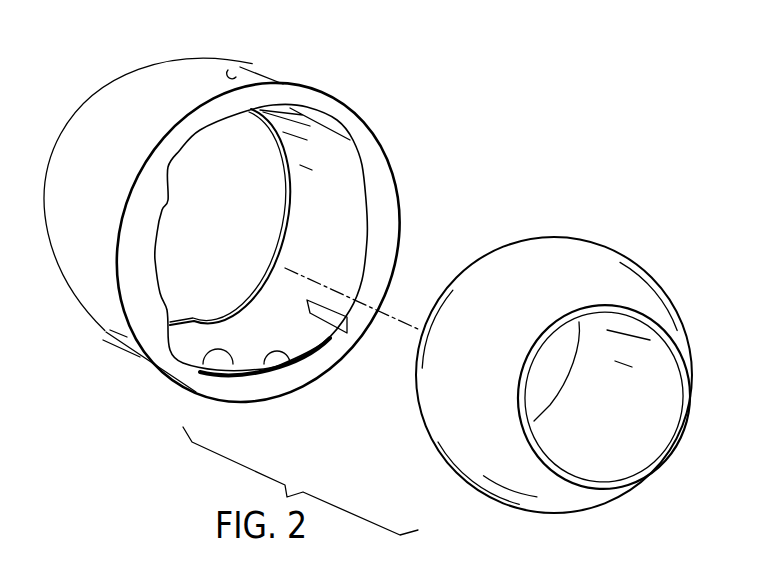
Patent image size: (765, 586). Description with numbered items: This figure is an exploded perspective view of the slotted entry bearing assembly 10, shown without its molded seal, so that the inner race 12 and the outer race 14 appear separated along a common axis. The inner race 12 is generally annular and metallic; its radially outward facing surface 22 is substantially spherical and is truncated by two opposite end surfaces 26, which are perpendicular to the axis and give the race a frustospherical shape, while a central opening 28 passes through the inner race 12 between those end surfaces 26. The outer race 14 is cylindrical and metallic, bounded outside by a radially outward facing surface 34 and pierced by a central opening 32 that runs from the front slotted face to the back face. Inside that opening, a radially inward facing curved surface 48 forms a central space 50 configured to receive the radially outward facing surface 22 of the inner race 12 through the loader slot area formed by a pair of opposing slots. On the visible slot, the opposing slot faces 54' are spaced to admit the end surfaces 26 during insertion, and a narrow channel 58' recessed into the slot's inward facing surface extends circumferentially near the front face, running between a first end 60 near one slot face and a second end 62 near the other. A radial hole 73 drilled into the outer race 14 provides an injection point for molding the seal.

The slotted entry bearing assembly 10 is at (96, 48).
The inner race 12 is at (656, 254).
The outer race 14 is at (108, 372).
The radially outward facing surface 22 is at (544, 260).
The end surfaces 26 is at (677, 357).
The central opening 28 is at (594, 430).
The central opening 32 is at (188, 248).
The radially outward facing surface 34 is at (68, 190).
The radially inward facing curved surface 48 is at (327, 227).
The central space 50 is at (236, 175).
The opposing slot faces 54' is at (360, 344).
The narrow channel 58' is at (284, 393).
The first end 60 is at (332, 336).
The second end 62 is at (233, 370).
The radial hole 73 is at (228, 62).